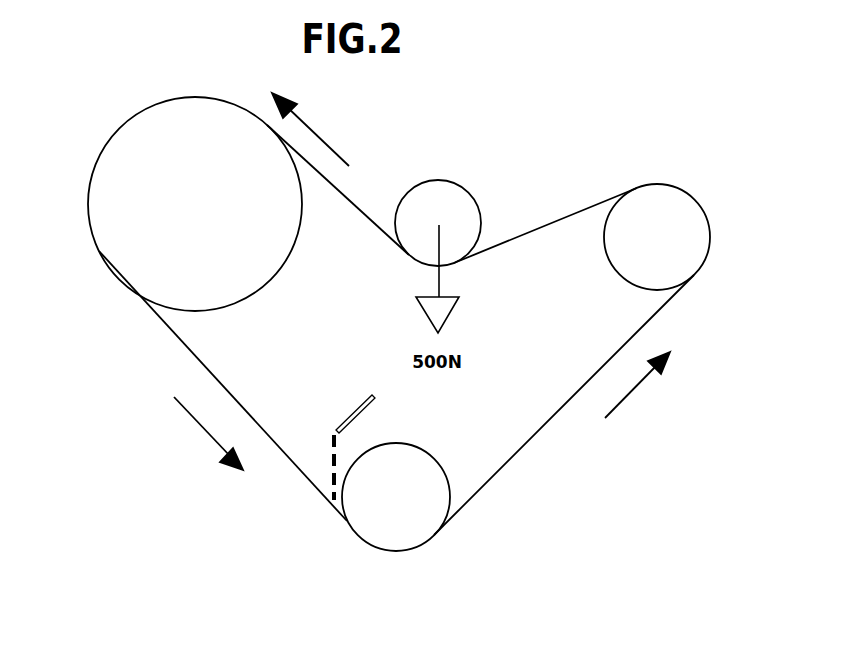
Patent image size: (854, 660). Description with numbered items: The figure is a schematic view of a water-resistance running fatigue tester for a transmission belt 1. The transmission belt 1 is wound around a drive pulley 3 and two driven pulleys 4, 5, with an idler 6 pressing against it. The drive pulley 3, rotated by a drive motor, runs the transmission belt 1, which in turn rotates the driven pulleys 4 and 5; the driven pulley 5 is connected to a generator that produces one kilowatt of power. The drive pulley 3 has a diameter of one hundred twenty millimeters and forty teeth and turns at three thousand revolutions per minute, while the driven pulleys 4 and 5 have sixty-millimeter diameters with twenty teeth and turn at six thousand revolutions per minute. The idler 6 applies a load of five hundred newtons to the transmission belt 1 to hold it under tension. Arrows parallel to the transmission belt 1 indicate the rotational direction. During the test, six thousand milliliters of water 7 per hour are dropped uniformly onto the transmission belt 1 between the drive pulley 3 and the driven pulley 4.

The transmission belt 1 is at (532, 438).
The drive pulley 3 is at (134, 112).
The driven pulley 4 is at (413, 550).
The driven pulley 5 is at (652, 183).
The idler 6 is at (420, 180).
The water 7 is at (326, 444).